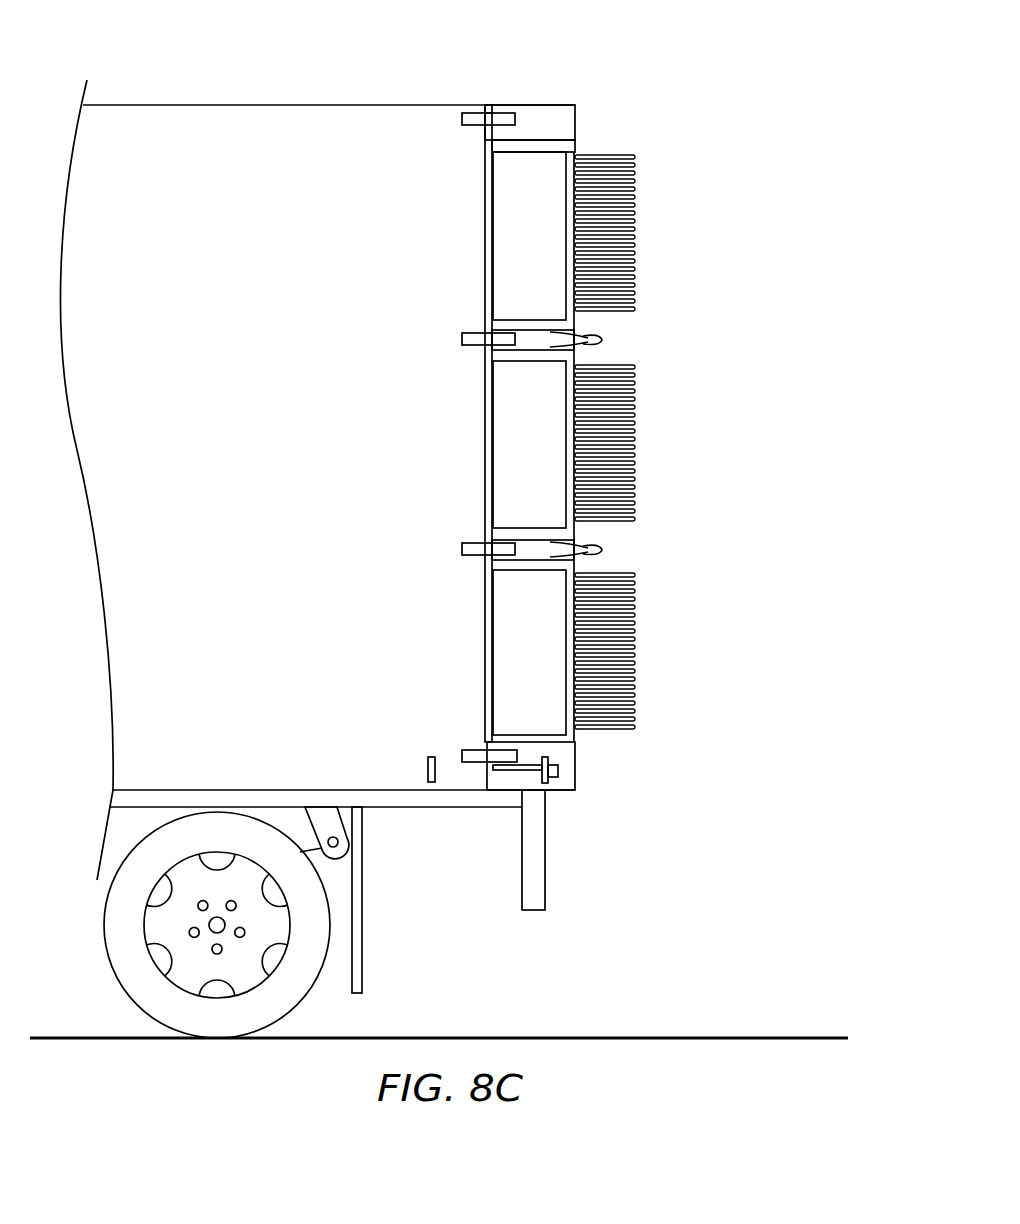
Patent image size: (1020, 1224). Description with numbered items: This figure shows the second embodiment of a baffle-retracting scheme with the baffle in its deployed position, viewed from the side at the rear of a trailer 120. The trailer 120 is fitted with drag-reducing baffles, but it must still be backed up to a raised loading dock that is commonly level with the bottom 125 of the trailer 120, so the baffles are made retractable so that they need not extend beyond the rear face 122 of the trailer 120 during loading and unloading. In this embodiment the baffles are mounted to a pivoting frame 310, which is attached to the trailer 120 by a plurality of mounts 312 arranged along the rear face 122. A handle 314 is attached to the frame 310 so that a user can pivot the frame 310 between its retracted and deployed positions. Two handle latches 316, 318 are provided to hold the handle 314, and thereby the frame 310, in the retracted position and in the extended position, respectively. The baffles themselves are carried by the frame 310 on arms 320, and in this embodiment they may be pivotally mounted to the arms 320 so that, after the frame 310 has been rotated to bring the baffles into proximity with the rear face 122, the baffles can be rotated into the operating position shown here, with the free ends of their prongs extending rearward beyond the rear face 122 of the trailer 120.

The trailer 120 is at (308, 76).
The rear face 122 is at (580, 106).
The bottom 125 is at (568, 804).
The pivoting frame 310 is at (487, 230).
The mounts 312 is at (460, 120).
The handle 314 is at (510, 776).
The handle latch 316 is at (430, 784).
The handle latch 318 is at (559, 768).
The arms 320 is at (595, 444).